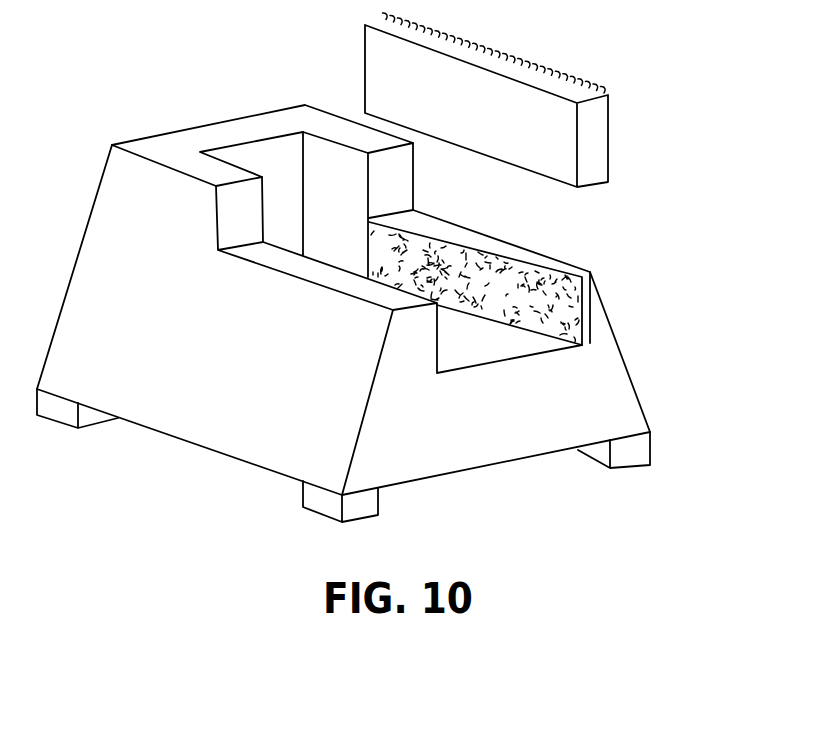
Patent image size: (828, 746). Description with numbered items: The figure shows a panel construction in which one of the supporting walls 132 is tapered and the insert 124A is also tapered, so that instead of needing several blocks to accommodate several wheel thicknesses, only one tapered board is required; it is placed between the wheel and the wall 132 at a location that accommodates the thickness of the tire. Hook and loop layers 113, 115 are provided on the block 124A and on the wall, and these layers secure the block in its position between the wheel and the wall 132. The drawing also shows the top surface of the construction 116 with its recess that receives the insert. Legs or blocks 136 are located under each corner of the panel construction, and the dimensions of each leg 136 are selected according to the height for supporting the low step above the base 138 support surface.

The hook and loop layer 113 is at (535, 63).
The insert 124A is at (595, 123).
The top surface of block 116 is at (206, 138).
The hook and loop layer 115 is at (428, 255).
The supporting wall 132 is at (517, 242).
The leg 136 is at (88, 417).
The base 138 is at (517, 462).